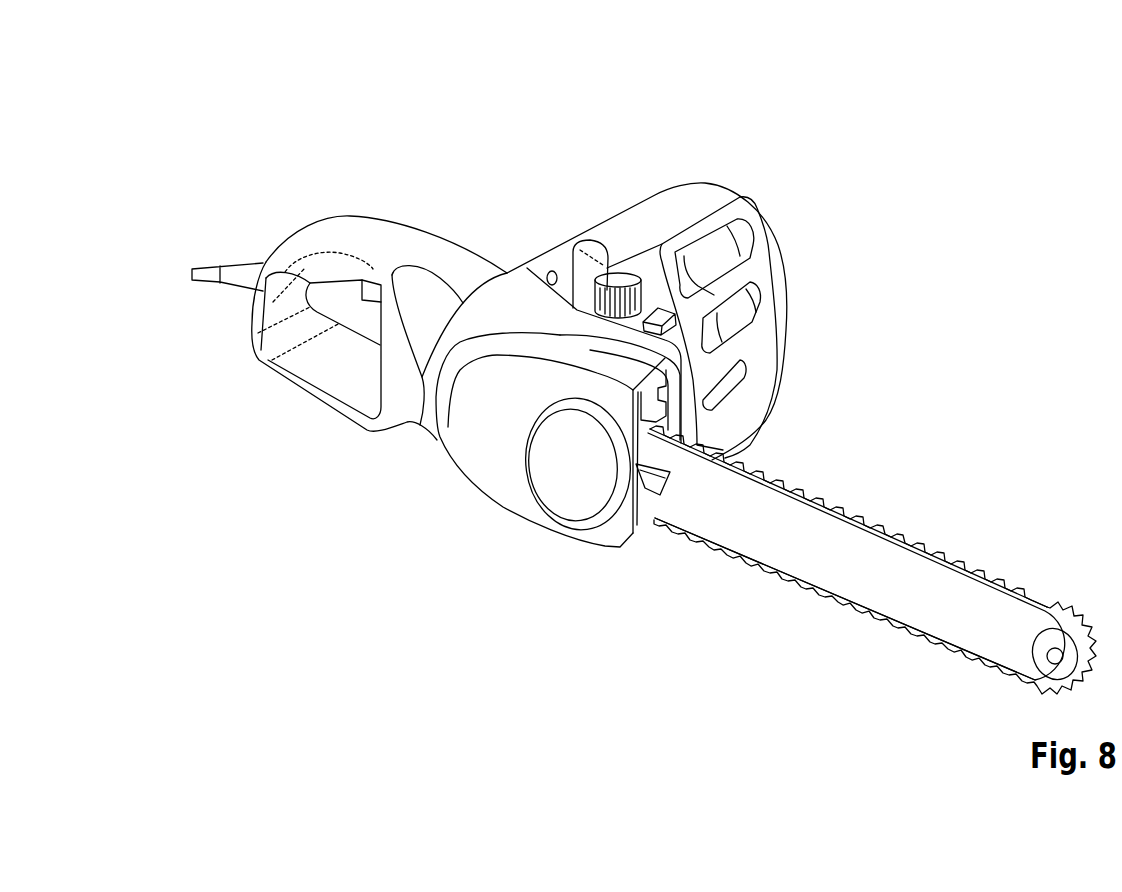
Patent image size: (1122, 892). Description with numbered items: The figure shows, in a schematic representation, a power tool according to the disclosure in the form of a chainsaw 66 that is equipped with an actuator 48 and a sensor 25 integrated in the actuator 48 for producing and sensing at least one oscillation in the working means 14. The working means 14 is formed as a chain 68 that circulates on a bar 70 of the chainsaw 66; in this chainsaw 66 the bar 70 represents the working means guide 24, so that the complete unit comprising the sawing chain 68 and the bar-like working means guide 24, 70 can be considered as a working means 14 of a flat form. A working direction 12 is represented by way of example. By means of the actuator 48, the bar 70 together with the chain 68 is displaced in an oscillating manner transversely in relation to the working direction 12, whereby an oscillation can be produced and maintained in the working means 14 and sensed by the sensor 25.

The chainsaw 66 is at (500, 162).
The working means 14 is at (780, 515).
The working direction 12 is at (873, 560).
The working means guide 24 is at (848, 516).
The bar 70 is at (845, 545).
The sensor 25 is at (647, 528).
The actuator 48 is at (650, 483).
The chain 68 is at (953, 650).